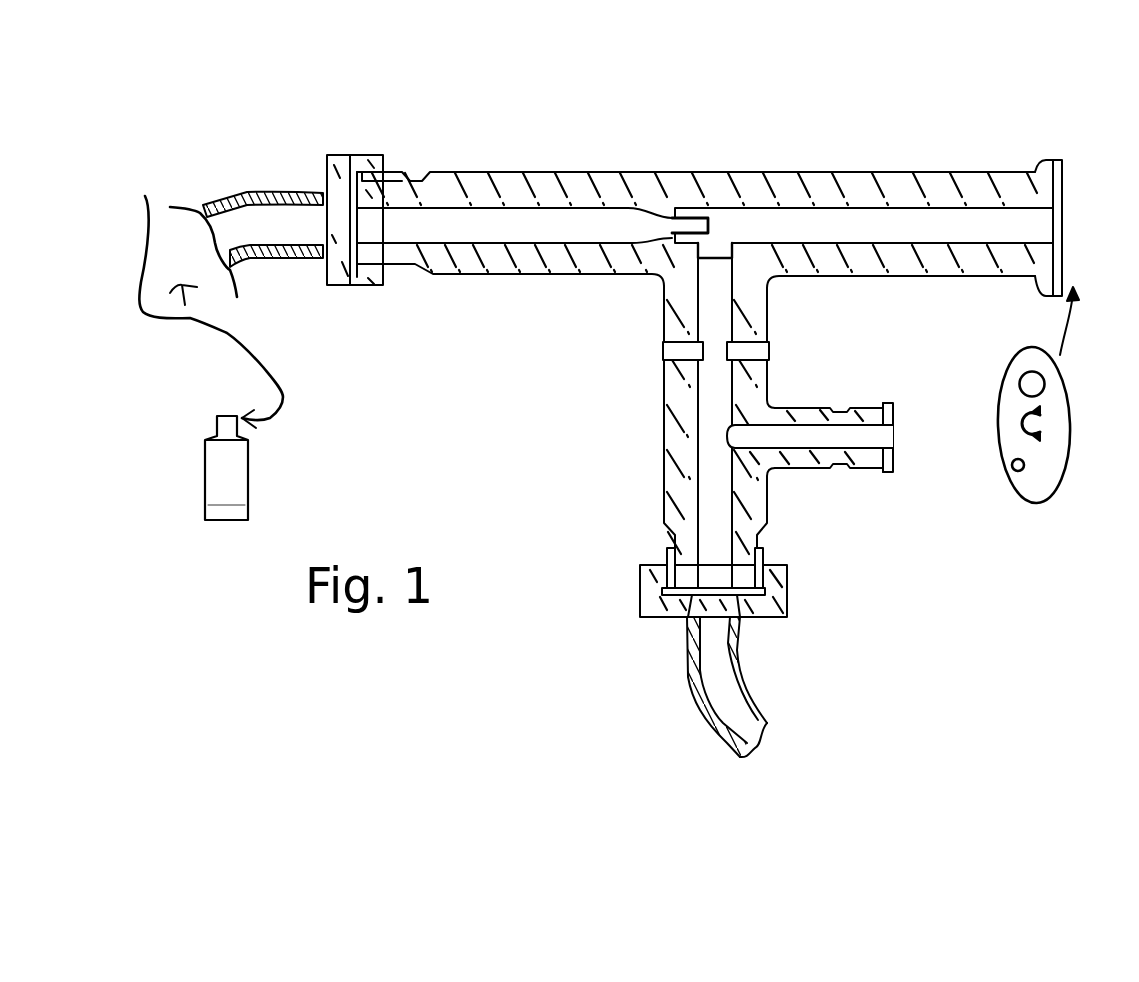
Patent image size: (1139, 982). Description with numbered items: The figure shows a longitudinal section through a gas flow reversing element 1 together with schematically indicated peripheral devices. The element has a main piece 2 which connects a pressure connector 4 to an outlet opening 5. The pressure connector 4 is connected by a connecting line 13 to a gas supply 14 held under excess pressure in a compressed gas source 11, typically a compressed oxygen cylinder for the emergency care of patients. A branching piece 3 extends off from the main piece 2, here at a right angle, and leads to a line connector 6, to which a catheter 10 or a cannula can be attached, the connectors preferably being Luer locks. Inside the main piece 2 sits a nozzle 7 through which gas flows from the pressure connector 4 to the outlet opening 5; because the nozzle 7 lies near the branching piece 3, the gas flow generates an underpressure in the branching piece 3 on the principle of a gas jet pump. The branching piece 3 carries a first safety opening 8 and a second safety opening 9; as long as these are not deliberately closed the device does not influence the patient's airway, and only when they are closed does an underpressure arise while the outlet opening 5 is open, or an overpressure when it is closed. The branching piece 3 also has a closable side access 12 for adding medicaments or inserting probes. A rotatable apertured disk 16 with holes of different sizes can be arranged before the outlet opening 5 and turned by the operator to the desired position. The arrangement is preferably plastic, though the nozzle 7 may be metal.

The gas flow reversing element 1 is at (677, 132).
The main piece 2 is at (825, 187).
The branching piece 3 is at (675, 445).
The pressure connector 4 is at (383, 228).
The outlet opening 5 is at (1062, 237).
The line connector 6 is at (760, 620).
The nozzle 7 is at (707, 232).
The first safety opening 8 is at (662, 352).
The second safety opening 9 is at (768, 350).
The catheter 10 is at (752, 710).
The compressed gas source 11 is at (205, 462).
The closable side access 12 is at (893, 437).
The connecting line 13 is at (203, 207).
The gas supply 14 is at (223, 497).
The rotatable apertured disk 16 is at (1013, 487).